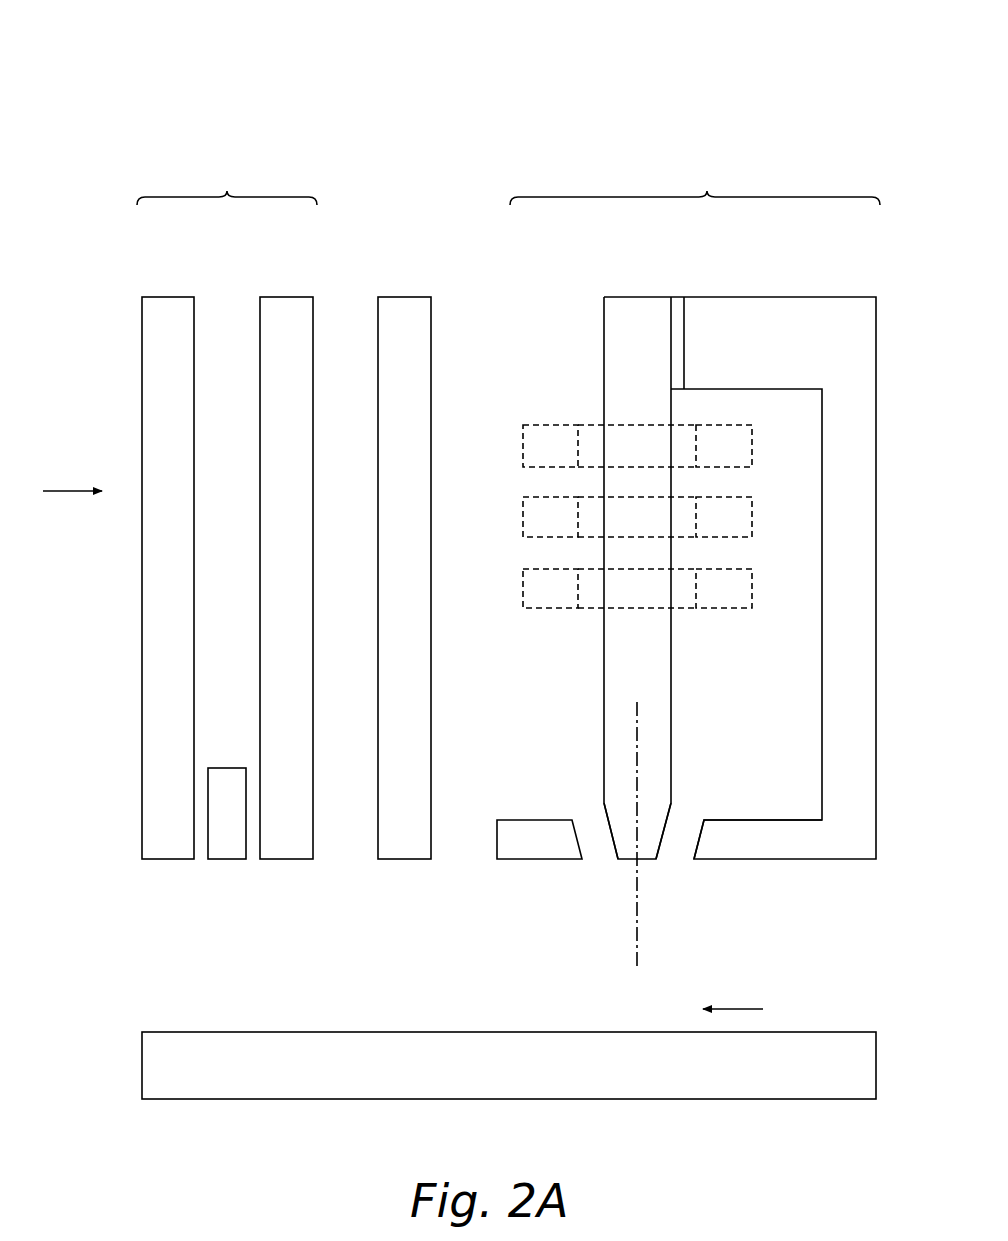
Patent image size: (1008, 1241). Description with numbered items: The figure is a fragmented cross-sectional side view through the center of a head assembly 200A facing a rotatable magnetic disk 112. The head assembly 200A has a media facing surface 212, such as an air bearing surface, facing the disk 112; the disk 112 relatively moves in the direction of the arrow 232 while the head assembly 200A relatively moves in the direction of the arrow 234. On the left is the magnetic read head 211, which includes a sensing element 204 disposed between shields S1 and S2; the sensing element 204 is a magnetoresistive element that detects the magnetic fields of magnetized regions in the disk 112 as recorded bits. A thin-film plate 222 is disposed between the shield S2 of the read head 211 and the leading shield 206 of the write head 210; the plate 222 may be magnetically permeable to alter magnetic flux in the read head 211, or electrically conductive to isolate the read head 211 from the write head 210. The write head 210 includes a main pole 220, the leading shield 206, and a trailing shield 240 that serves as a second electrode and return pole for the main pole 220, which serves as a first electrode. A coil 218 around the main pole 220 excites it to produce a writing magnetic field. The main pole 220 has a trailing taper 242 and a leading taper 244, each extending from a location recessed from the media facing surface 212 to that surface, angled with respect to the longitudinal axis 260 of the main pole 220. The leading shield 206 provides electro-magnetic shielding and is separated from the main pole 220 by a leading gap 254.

The head assembly 200A is at (157, 44).
The magnetic read head 211 is at (227, 191).
The write head 210 is at (707, 191).
The shield S1 is at (168, 609).
The shield S2 is at (286, 609).
The sensing element 204 is at (224, 860).
The thin-film plate 222 is at (431, 728).
The arrow 234 is at (72, 491).
The trailing shield 240 is at (845, 845).
The main pole 220 is at (655, 662).
The leading taper 244 is at (610, 835).
The trailing taper 242 is at (666, 812).
The media facing surface 212 is at (755, 860).
The leading shield 206 is at (520, 860).
The leading gap 254 is at (598, 852).
The coil 218 is at (548, 608).
The longitudinal axis 260 is at (637, 957).
The arrow 232 is at (745, 1009).
The rotatable magnetic disk 112 is at (142, 1062).